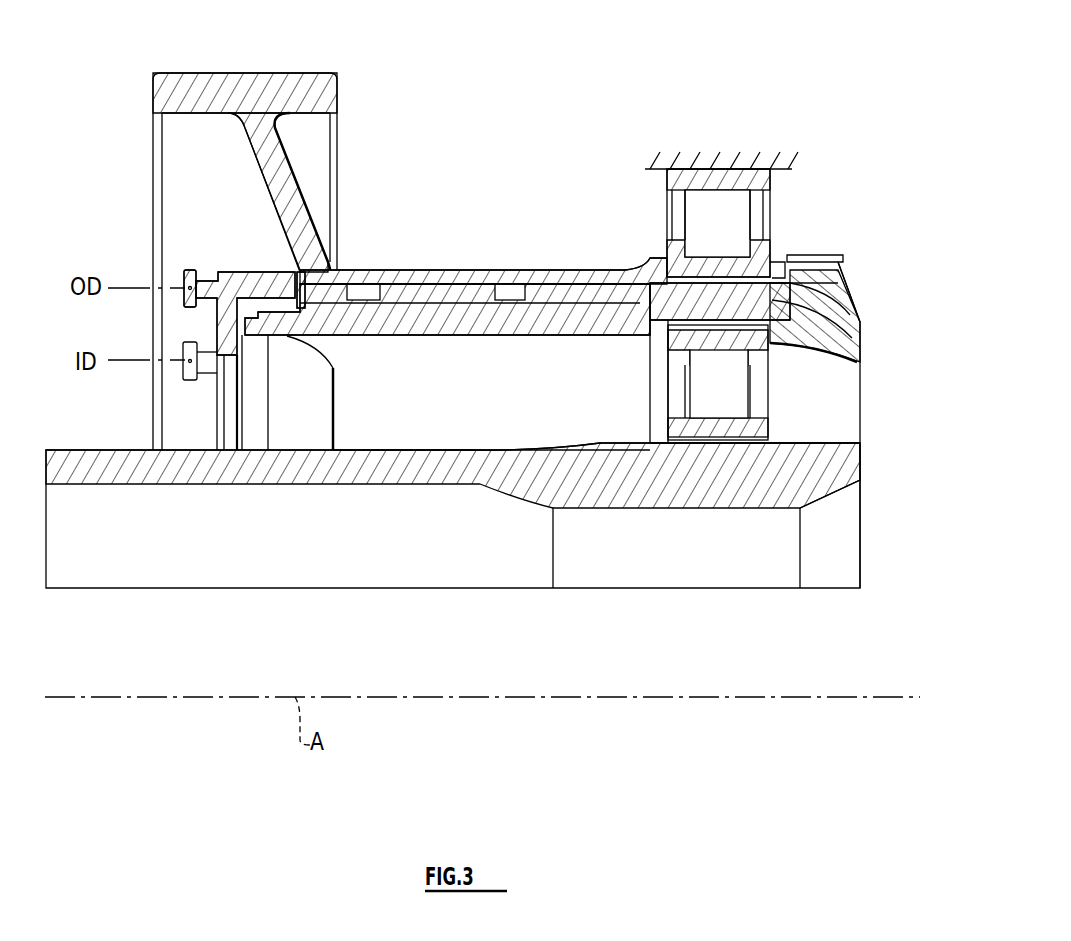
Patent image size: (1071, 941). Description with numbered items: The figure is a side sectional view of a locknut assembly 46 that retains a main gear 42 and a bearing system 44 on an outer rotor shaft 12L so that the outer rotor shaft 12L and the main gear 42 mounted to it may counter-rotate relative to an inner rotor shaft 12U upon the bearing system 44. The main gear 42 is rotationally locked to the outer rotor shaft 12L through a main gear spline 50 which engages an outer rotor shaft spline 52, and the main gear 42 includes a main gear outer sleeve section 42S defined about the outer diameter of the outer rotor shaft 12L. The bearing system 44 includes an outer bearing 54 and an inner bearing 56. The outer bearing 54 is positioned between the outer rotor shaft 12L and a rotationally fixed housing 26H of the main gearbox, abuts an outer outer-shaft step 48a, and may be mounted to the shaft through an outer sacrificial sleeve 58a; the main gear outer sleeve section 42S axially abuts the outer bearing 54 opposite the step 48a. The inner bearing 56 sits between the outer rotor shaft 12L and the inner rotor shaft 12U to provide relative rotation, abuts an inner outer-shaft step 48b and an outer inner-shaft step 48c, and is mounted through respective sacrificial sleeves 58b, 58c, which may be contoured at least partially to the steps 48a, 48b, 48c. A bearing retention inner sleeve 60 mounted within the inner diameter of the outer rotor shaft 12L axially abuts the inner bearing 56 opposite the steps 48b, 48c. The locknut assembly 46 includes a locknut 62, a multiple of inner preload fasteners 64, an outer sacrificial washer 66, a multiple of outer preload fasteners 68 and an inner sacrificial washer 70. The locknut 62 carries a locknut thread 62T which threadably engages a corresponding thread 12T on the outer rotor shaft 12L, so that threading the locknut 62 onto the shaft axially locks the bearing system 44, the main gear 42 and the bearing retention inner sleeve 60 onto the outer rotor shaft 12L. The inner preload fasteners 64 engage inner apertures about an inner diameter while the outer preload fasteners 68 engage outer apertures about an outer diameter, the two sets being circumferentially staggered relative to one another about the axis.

The main gear 42 is at (410, 230).
The main gear outer sleeve section 42S is at (470, 270).
The bearing system 44 is at (743, 261).
The housing 26H is at (650, 155).
The locknut assembly 46 is at (251, 316).
The outer outer-shaft step 48a is at (815, 260).
The inner outer-shaft step 48b is at (838, 300).
The outer inner-shaft step 48c is at (788, 445).
The main gear spline 50 is at (432, 270).
The outer rotor shaft spline 52 is at (515, 277).
The outer bearing 54 is at (772, 197).
The inner bearing 56 is at (743, 395).
The outer sacrificial sleeve 58a is at (778, 272).
The sacrificial sleeve 58b is at (800, 283).
The sacrificial sleeve 58c is at (737, 443).
The bearing retention inner sleeve 60 is at (475, 413).
The locknut 62 is at (227, 413).
The locknut thread 62T is at (302, 270).
The inner preload fasteners 64 is at (187, 355).
The outer sacrificial washer 66 is at (298, 235).
The outer preload fasteners 68 is at (186, 280).
The inner sacrificial washer 70 is at (256, 414).
The thread 12T is at (290, 340).
The outer rotor shaft 12L is at (856, 352).
The inner rotor shaft 12U is at (850, 468).